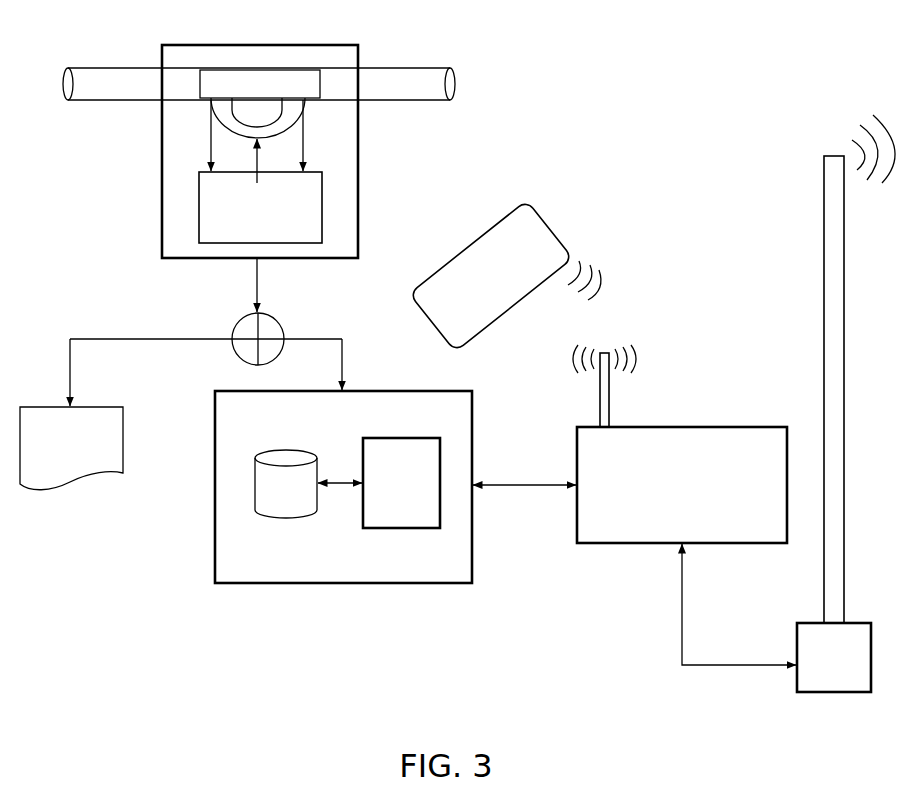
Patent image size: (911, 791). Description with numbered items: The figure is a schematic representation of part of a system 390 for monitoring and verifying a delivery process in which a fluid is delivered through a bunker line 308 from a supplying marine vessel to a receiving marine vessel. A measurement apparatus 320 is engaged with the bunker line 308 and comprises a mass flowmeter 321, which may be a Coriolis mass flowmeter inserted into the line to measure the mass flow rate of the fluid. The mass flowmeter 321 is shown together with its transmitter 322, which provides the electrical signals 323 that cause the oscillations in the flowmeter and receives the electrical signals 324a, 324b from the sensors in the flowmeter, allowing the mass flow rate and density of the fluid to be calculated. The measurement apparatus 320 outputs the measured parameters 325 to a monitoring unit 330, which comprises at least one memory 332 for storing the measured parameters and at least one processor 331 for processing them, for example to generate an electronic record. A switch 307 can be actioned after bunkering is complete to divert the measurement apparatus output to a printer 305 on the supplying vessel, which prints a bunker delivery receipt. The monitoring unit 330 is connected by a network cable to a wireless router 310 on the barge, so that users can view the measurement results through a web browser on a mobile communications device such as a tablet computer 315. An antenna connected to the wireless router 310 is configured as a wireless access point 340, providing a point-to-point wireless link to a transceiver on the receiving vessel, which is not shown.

The measurement apparatus 320 is at (260, 133).
The bunker line 308 is at (253, 104).
The mass flowmeter 321 is at (275, 104).
The transmitter 322 is at (260, 207).
The electrical signals 323 is at (276, 161).
The electrical signals 324a is at (172, 135).
The electrical signals 324b is at (343, 135).
The measured parameters 325 is at (285, 285).
The switch 307 is at (206, 353).
The printer 305 is at (71, 448).
The monitoring unit 330 is at (343, 508).
The processor 331 is at (401, 500).
The memory 332 is at (286, 506).
The wireless router 310 is at (680, 444).
The tablet computer 315 is at (505, 275).
The wireless access point 340 is at (846, 427).
The system 390 is at (566, 136).